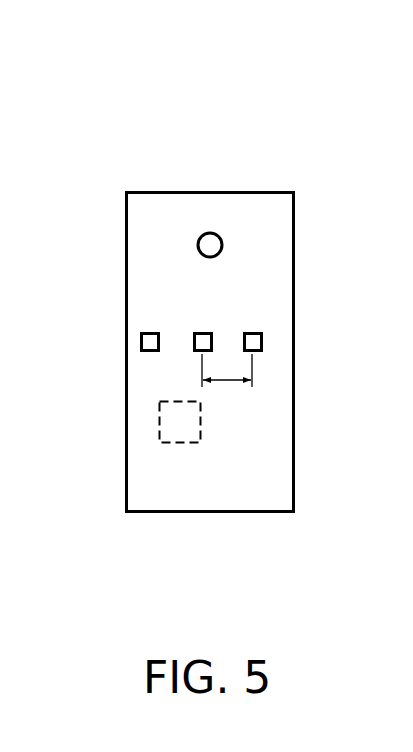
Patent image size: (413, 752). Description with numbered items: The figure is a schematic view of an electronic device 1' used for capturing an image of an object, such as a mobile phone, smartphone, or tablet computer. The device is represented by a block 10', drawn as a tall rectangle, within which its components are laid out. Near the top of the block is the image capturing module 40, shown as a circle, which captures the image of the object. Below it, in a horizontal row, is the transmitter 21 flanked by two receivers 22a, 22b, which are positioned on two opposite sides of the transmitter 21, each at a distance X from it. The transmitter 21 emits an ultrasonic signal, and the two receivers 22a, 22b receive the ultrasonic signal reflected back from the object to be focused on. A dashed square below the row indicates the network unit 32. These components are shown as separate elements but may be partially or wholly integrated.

The electronic device 1' is at (37, 70).
The block 10' is at (210, 319).
The image capturing module 40 is at (209, 232).
The transmitter 21 is at (202, 331).
The receiver 22a is at (140, 344).
The receiver 22b is at (264, 340).
The network unit 32 is at (158, 420).
The distance X is at (227, 370).